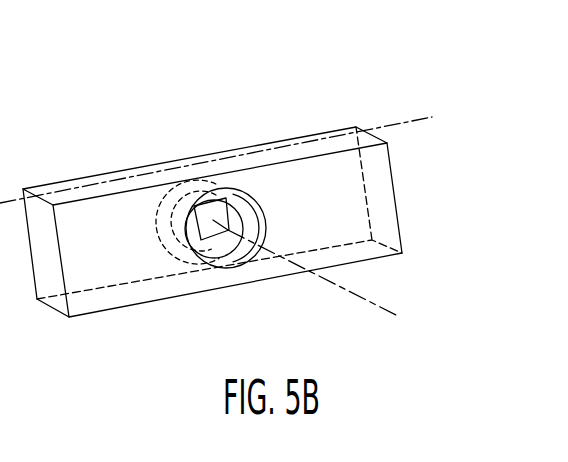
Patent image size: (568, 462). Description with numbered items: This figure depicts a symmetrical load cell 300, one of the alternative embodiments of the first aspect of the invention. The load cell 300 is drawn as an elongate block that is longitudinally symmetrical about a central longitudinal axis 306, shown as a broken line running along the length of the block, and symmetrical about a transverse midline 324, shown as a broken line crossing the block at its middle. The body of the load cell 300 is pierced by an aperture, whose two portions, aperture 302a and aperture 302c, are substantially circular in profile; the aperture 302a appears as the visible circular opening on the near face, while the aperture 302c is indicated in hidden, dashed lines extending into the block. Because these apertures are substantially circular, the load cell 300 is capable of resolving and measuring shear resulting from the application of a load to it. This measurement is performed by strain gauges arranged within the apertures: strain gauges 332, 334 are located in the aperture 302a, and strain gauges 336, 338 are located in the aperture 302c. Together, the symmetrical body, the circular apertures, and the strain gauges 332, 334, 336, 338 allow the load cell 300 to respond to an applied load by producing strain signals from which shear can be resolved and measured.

The load cell 300 is at (111, 96).
The central longitudinal axis 306 is at (412, 121).
The transverse midline 324 is at (382, 312).
The aperture 302c is at (170, 197).
The aperture 302a is at (247, 258).
The strain gauge 332 is at (197, 268).
The strain gauge 334 is at (202, 255).
The strain gauge 336 is at (231, 175).
The strain gauge 338 is at (215, 205).